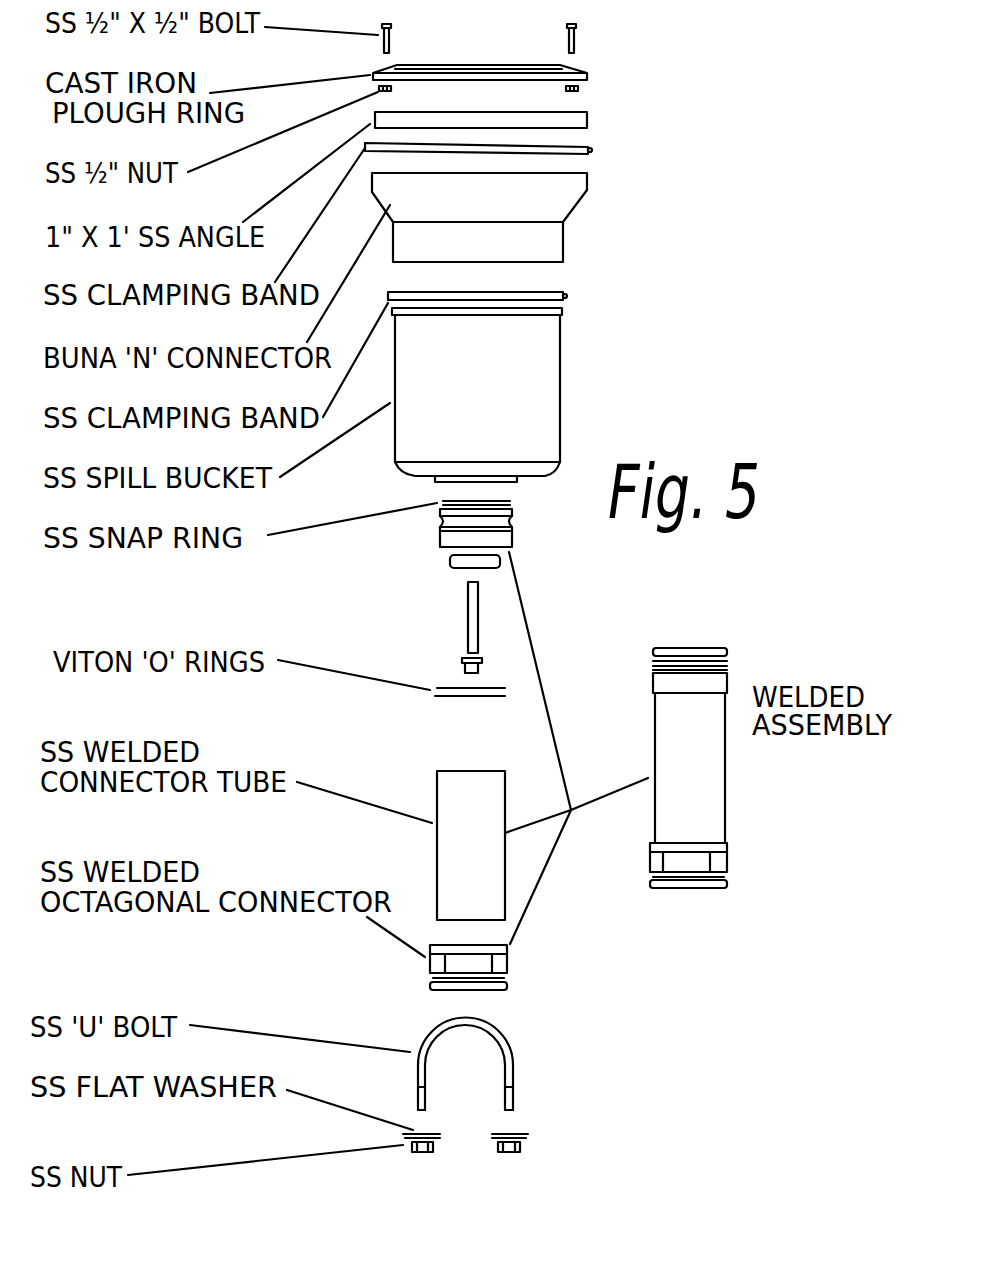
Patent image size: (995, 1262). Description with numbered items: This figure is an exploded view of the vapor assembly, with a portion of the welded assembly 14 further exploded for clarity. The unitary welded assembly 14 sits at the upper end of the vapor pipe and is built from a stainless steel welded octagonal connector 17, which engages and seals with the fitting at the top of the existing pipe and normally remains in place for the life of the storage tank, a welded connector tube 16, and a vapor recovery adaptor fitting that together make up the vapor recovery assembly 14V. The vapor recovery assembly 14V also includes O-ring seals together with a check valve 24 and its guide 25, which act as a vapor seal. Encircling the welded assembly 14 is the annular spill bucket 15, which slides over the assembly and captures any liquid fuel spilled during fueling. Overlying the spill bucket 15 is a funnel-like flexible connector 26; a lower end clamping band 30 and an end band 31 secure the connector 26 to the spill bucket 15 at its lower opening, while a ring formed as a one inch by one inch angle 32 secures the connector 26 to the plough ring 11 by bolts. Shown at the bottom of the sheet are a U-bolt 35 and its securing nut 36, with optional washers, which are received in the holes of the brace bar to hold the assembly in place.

The plough ring 11 is at (587, 73).
The 1 inch by 1 inch angle 32 is at (587, 121).
The end band 31 is at (592, 149).
The flexible connector 26 is at (563, 222).
The lower end clamping band 30 is at (567, 296).
The spill bucket 15 is at (560, 400).
The vapor recovery assembly 14V is at (512, 541).
The check valve 24 is at (450, 562).
The guide 25 is at (465, 634).
The welded connector tube 16 is at (437, 797).
The welded octagonal connector 17 is at (507, 967).
The welded assembly 14 is at (732, 786).
The U-bolt 35 is at (513, 1050).
The securing nut 36 is at (522, 1147).